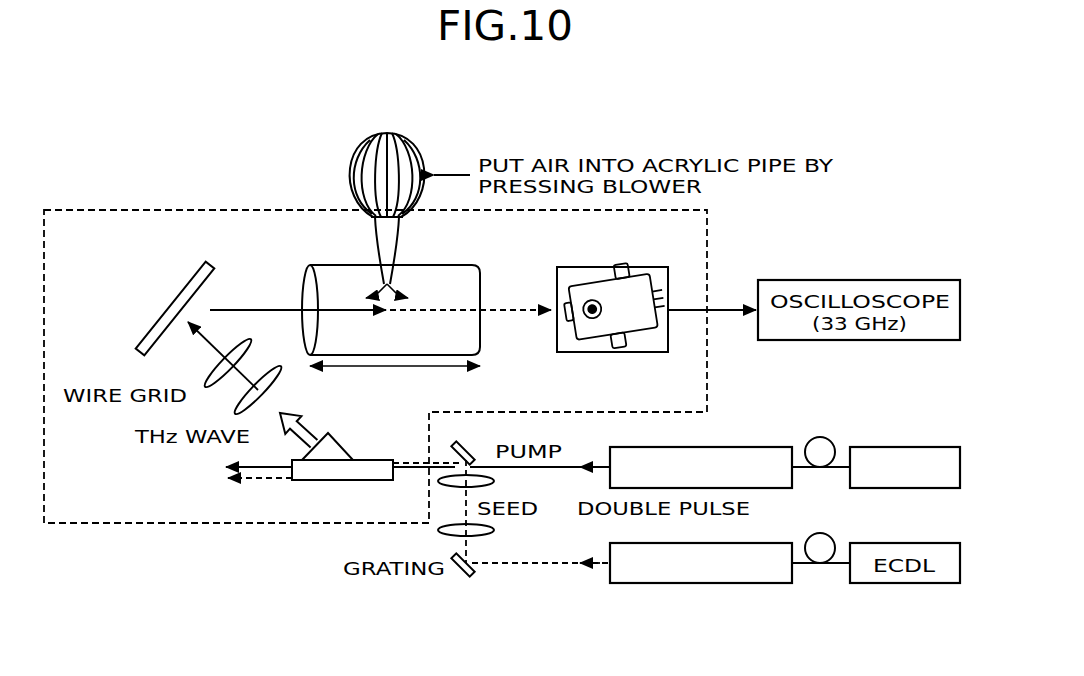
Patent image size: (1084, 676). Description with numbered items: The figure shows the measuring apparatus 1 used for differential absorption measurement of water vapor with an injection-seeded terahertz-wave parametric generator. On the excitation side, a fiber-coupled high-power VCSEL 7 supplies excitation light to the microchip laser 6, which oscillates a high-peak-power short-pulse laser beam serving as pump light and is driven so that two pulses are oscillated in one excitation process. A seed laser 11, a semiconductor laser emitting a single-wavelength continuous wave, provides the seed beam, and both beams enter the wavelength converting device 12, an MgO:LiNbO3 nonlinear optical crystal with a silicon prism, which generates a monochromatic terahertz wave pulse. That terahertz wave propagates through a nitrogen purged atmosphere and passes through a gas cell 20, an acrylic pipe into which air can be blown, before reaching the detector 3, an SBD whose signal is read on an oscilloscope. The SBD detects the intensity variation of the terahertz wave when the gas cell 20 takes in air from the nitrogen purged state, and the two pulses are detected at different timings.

The measuring apparatus 1 is at (206, 159).
The gas cell 20 is at (480, 338).
The detector 3 is at (633, 352).
The microchip laser 6 is at (764, 424).
The vertical cavity surface emitting laser 7 is at (925, 447).
The wavelength converting device 12 is at (291, 478).
The seed laser 11 is at (764, 602).